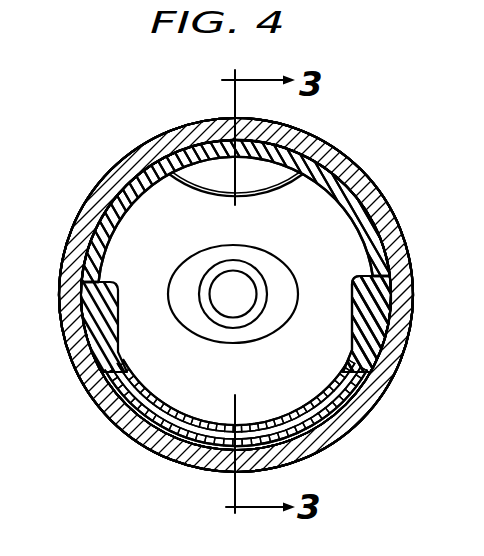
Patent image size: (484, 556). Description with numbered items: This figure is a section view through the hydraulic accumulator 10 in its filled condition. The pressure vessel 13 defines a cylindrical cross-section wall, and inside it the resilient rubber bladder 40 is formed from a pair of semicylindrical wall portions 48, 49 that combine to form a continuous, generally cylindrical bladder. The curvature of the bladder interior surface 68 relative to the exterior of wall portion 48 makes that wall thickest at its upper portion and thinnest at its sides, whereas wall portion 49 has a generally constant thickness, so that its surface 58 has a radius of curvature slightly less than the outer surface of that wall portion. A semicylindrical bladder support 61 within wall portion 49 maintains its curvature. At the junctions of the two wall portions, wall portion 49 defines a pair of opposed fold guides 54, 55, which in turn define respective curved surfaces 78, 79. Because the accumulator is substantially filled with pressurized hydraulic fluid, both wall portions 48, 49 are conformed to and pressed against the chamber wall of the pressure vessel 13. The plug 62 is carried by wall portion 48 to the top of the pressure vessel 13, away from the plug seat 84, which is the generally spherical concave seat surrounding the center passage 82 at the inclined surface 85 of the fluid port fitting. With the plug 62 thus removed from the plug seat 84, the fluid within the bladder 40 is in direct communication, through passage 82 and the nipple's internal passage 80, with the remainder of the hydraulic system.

The device assembly 10 is at (373, 155).
The pressure vessel 13 is at (387, 220).
The bladder 40 is at (387, 365).
The wall portion 48 is at (340, 187).
The wall portion 49 is at (295, 428).
The fold guide 54 is at (76, 335).
The fold guide 55 is at (372, 310).
The surface 58 is at (203, 428).
The bladder support 61 is at (203, 462).
The plug 62 is at (262, 168).
The bladder interior surface 68 is at (145, 190).
The curved surface 78 is at (112, 283).
The curved surface 79 is at (372, 278).
The internal passage 80 is at (252, 310).
The center passage 82 is at (262, 268).
The plug seat 84 is at (290, 282).
The inclined surface 85 is at (96, 232).